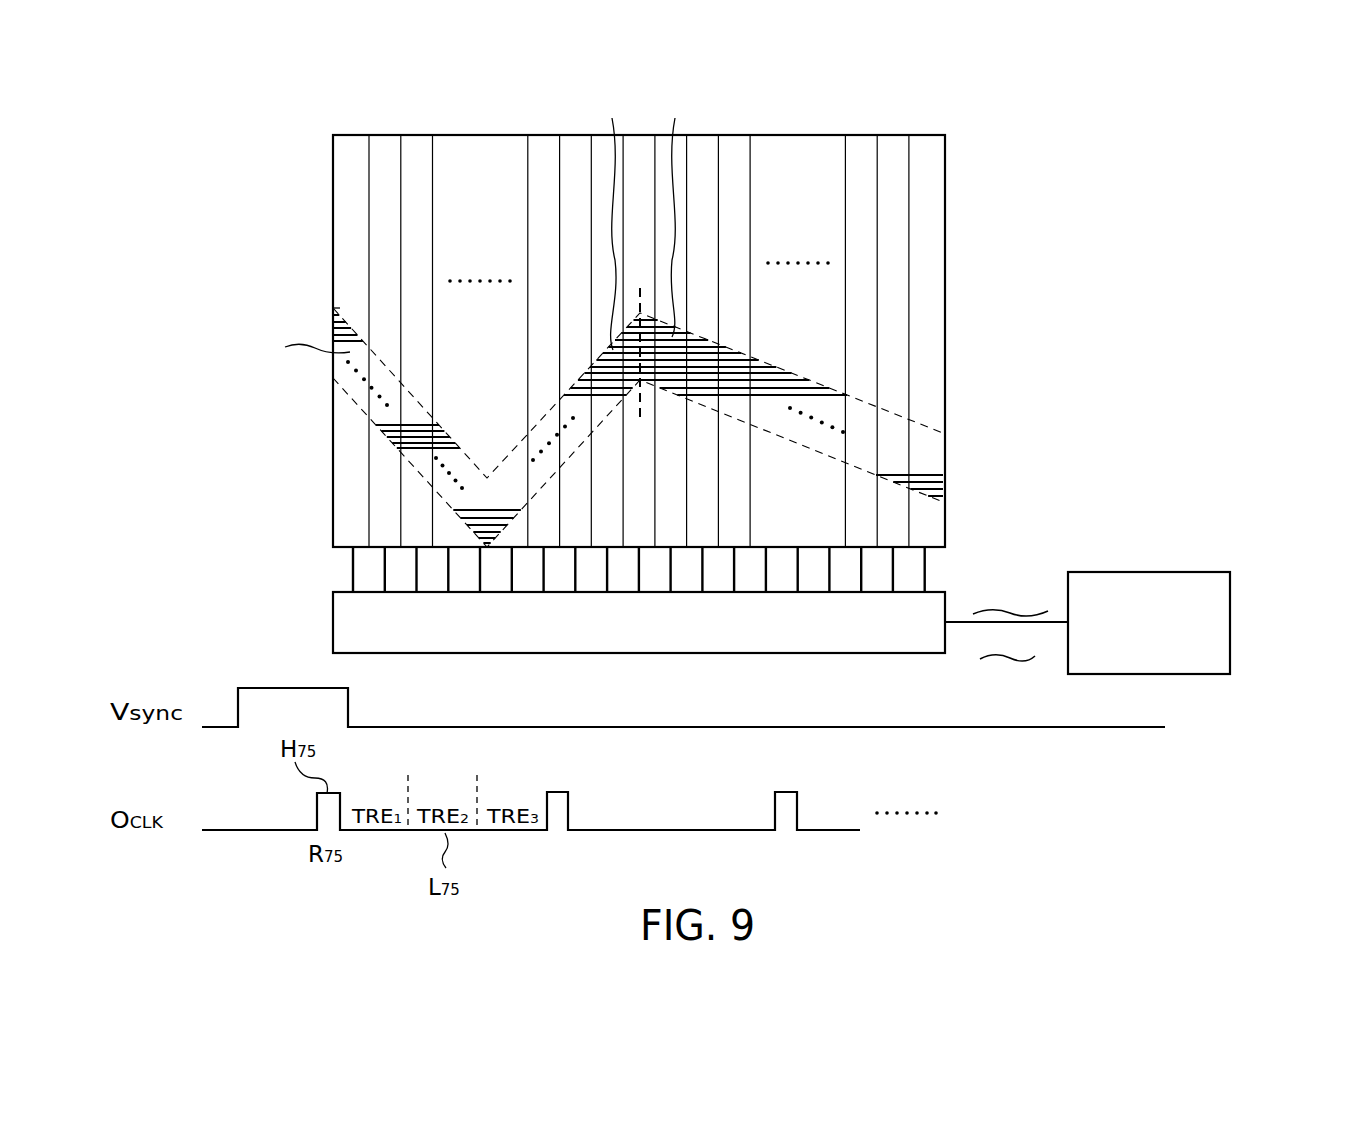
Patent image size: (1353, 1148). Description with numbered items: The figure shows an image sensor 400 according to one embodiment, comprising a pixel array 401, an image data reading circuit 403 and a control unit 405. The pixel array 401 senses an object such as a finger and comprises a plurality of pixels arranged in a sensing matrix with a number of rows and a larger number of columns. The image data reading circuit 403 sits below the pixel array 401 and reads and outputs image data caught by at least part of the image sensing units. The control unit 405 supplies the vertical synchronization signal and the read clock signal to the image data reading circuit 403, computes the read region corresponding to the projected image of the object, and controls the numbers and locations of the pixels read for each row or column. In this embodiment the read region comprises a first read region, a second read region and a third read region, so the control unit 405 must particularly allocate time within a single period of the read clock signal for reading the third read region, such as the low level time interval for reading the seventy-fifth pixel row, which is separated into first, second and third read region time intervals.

The image sensor 400 is at (1180, 176).
The pixel array 401 is at (921, 133).
The image data reading circuit 403 is at (333, 622).
The control unit 405 is at (1148, 572).